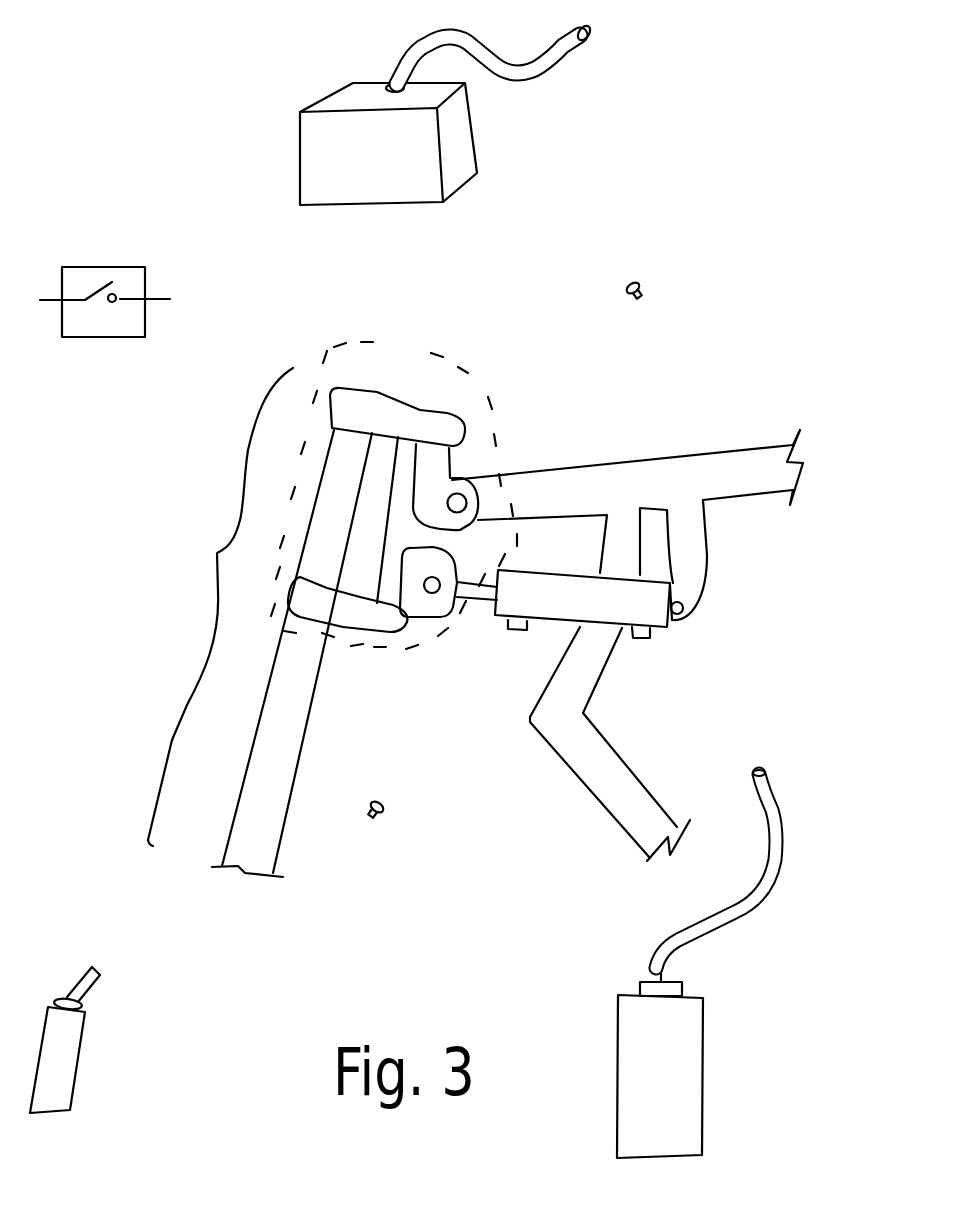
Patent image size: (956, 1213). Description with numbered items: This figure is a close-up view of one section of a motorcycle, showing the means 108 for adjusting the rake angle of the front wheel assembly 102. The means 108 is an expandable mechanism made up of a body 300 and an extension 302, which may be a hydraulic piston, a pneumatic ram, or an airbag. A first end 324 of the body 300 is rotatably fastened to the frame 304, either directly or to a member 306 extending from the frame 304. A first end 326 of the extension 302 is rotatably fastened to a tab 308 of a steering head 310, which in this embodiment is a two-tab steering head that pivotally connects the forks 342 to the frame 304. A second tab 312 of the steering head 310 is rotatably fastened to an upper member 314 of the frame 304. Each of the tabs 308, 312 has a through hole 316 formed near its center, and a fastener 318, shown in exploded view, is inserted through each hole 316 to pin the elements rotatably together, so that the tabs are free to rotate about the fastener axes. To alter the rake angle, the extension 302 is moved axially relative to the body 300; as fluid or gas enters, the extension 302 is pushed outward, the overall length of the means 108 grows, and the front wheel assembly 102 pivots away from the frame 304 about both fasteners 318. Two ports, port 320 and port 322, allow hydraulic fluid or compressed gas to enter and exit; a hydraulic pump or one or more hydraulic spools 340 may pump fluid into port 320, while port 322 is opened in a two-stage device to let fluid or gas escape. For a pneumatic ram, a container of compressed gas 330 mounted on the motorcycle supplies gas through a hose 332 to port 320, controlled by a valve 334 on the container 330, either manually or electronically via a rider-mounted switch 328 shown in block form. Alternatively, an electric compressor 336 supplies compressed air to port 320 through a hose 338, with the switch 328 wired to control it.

The front wheel assembly 102 is at (213, 557).
The means for adjusting the rake angle 108 is at (585, 612).
The body 300 is at (560, 570).
The extension 302 is at (461, 622).
The frame 304 is at (766, 428).
The member 306 is at (707, 557).
The tab 308 is at (423, 617).
The steering head 310 is at (403, 347).
The tab 312 is at (452, 478).
The upper member 314 is at (587, 463).
The through hole 316 is at (459, 502).
The fastener 318 is at (625, 287).
The port 320 is at (637, 637).
The port 322 is at (510, 630).
The first end of body 324 is at (672, 640).
The first end of extension 326 is at (472, 569).
The switch 328 is at (100, 338).
The container of compressed gas 330 is at (690, 1090).
The hose 332 is at (772, 866).
The valve 334 is at (684, 982).
The electric compressor 336 is at (418, 178).
The hose 338 is at (520, 85).
The hydraulic spool 340 is at (83, 1067).
The forks 342 is at (248, 767).